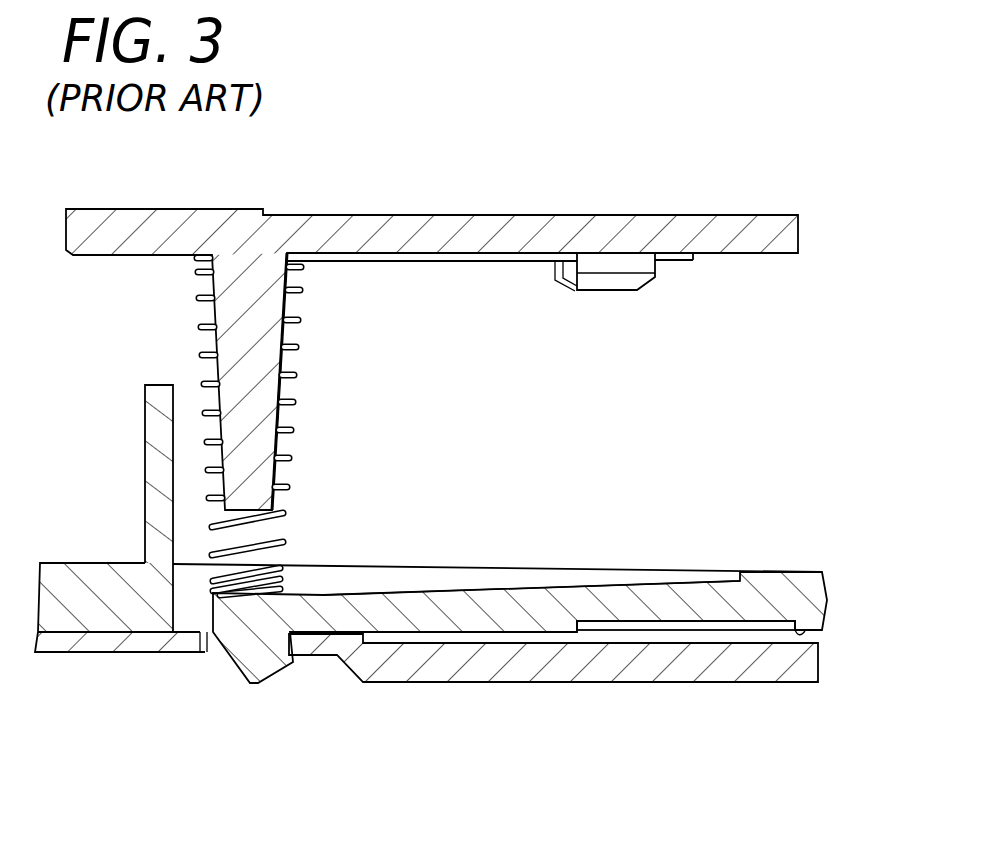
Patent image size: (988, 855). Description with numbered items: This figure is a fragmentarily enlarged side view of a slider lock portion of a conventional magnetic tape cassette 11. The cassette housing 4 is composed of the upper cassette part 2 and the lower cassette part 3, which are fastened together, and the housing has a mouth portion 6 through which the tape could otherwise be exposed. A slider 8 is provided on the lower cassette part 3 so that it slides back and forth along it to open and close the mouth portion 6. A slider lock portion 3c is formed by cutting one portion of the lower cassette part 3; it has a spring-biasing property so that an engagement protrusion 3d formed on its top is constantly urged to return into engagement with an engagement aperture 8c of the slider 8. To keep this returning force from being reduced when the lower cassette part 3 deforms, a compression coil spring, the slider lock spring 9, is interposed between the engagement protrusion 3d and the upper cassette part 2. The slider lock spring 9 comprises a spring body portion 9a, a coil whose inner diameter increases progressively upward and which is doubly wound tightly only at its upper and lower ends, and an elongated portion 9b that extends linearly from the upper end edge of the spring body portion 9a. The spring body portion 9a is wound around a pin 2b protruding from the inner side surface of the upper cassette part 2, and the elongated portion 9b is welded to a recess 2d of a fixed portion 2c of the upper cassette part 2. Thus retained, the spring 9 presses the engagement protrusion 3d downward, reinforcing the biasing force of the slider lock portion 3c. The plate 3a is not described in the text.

The upper cassette part 2 is at (763, 243).
The pin 2b is at (232, 340).
The fixed portion 2c is at (647, 268).
The recess 2d is at (568, 292).
The lower cassette part 3 is at (753, 578).
The engaging plate 3a is at (798, 630).
The slider lock portion 3c is at (442, 596).
The engagement protrusion 3d is at (273, 665).
The cassette housing 4 is at (776, 358).
The mouth portion 6 is at (112, 429).
The slider 8 is at (625, 668).
The engagement aperture 8c is at (209, 657).
The slider lock spring 9 is at (358, 383).
The spring body portion 9a is at (293, 403).
The elongated portion 9b is at (388, 263).
The magnetic tape cassette 11 is at (651, 160).